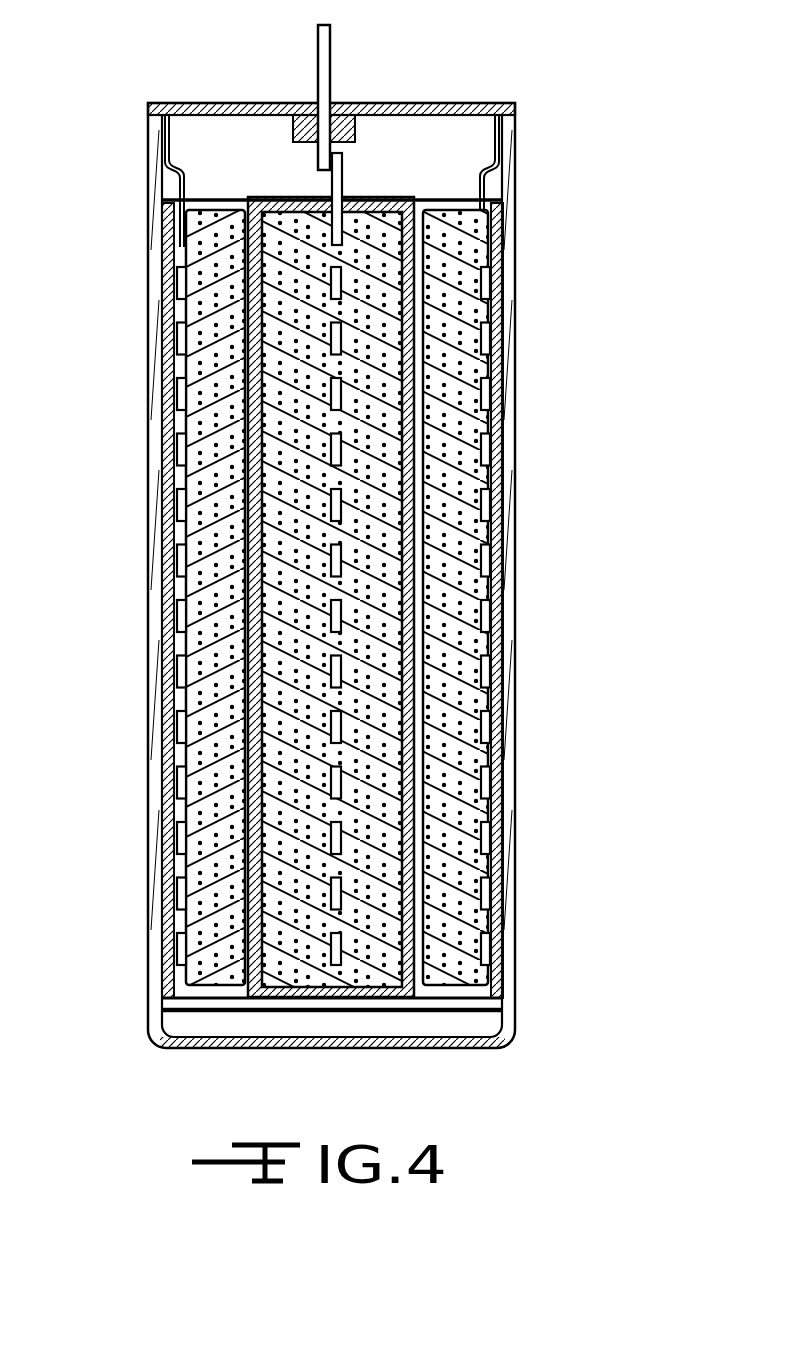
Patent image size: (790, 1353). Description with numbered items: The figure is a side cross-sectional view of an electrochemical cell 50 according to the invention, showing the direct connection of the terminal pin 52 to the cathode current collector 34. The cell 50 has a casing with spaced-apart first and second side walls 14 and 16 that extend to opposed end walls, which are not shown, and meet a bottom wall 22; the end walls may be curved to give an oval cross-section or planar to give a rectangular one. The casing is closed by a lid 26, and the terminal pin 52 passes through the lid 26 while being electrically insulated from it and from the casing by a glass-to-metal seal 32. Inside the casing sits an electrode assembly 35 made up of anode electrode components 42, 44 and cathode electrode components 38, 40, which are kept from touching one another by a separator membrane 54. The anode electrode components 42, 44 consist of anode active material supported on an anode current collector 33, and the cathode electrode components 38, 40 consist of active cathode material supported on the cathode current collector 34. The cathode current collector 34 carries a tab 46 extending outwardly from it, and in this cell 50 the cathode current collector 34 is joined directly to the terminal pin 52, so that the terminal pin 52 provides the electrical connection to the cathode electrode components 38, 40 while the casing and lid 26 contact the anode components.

The electrochemical cell 50 is at (150, 60).
The terminal pin 52 is at (328, 62).
The glass-to-metal seal 32 is at (313, 114).
The lid 26 is at (404, 102).
The tab 46 is at (346, 172).
The cathode current collector 34 is at (350, 272).
The anode current collector 33 is at (168, 278).
The cathode electrode component 38 is at (290, 382).
The cathode electrode component 40 is at (385, 324).
The anode electrode component 42 is at (453, 423).
The anode electrode component 44 is at (183, 473).
The second side wall 16 is at (513, 507).
The first side wall 14 is at (147, 577).
The separator membrane 54 is at (240, 627).
The electrode assembly 35 is at (370, 1013).
The bottom wall 22 is at (325, 1053).